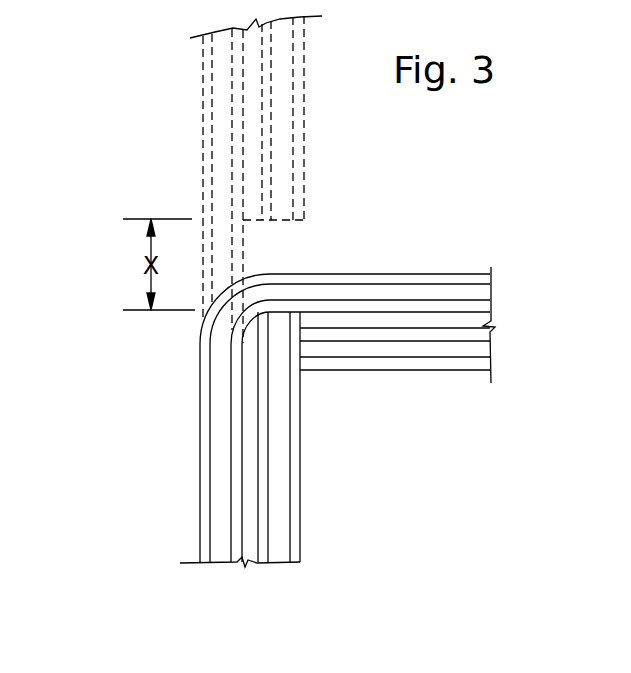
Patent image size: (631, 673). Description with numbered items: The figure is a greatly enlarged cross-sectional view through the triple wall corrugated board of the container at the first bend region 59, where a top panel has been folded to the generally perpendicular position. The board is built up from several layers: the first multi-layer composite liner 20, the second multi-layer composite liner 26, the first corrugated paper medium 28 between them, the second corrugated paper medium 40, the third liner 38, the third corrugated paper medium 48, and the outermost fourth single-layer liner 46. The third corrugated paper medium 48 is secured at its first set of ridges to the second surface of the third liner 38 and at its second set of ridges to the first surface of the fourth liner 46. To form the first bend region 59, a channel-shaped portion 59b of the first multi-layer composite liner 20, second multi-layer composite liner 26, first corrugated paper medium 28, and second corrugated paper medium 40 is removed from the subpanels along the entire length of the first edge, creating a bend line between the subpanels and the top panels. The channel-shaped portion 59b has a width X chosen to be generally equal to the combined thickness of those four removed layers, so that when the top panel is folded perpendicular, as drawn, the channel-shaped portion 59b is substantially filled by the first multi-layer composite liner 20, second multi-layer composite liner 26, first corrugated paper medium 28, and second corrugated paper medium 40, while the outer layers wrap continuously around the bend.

The first multi-layer composite liner 20 is at (293, 563).
The second multi-layer composite liner 26 is at (258, 563).
The first corrugated paper medium 28 is at (482, 353).
The third liner 38 is at (237, 563).
The second corrugated paper medium 40 is at (493, 327).
The fourth single-layer liner 46 is at (203, 563).
The third corrugated paper medium 48 is at (482, 297).
The first bend region 59 is at (310, 382).
The channel-shaped portion 59b is at (283, 252).